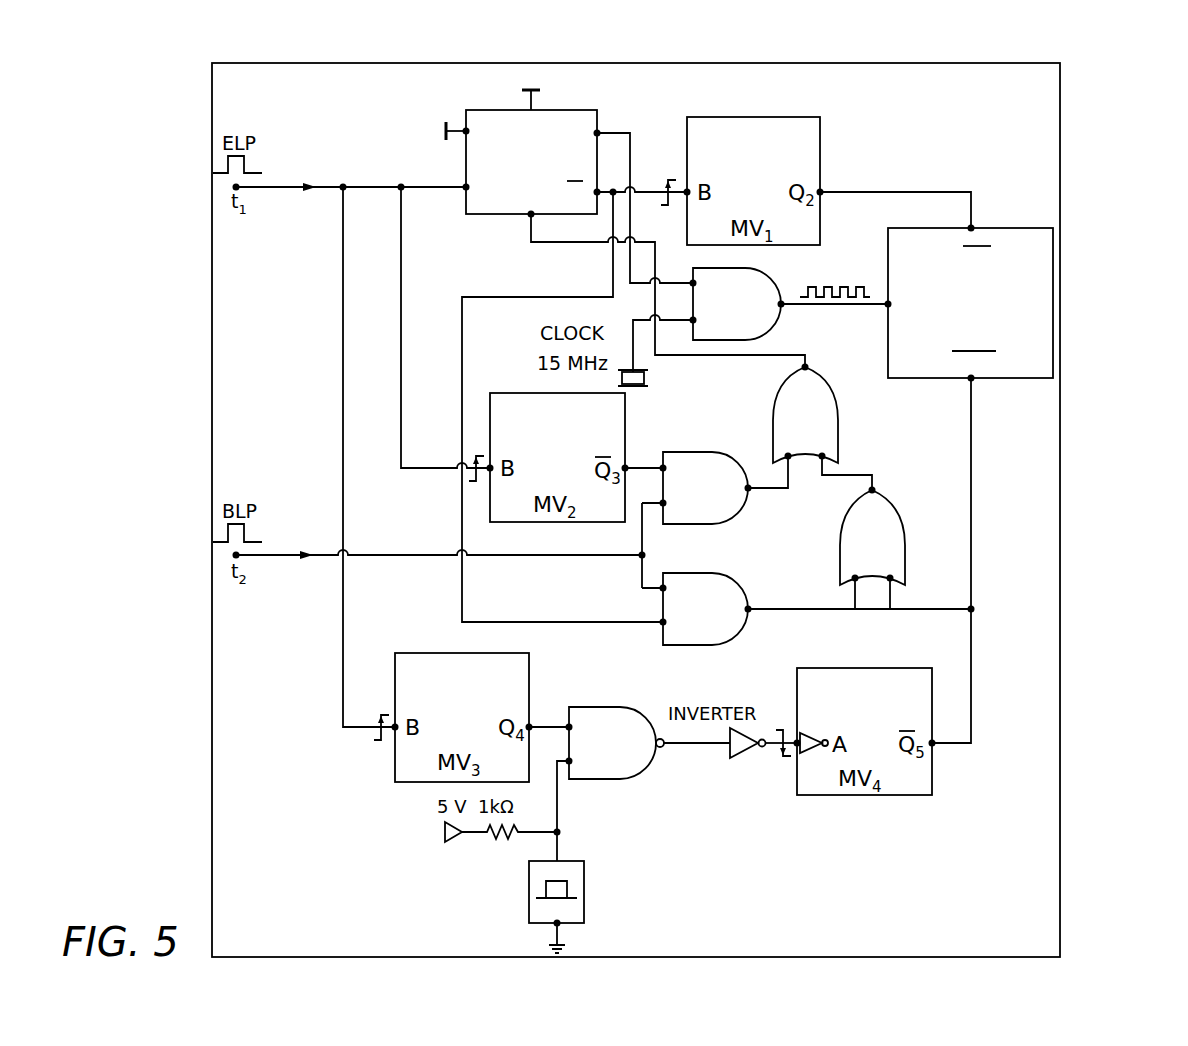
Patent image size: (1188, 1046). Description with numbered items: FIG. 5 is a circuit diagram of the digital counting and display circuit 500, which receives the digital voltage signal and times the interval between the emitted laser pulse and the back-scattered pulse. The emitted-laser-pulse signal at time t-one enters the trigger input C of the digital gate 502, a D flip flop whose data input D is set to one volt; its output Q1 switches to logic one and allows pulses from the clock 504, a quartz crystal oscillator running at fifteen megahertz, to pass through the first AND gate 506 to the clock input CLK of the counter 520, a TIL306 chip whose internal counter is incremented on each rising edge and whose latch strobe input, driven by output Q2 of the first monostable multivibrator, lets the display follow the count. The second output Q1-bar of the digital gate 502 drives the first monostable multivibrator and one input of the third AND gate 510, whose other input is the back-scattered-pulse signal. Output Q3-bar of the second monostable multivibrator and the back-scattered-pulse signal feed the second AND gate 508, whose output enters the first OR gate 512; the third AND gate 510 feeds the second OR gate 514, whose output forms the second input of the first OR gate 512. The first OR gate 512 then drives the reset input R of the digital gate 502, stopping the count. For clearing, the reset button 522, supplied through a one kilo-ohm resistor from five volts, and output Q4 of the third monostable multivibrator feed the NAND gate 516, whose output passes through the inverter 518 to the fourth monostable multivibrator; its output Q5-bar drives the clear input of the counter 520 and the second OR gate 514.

The digital counting and display circuit 500 is at (1079, 81).
The digital gate 502 is at (488, 216).
The clock 504 is at (648, 378).
The first AND gate 506 is at (737, 304).
The second AND gate 508 is at (705, 488).
The third AND gate 510 is at (705, 609).
The first OR gate 512 is at (805, 415).
The second OR gate 514 is at (872, 537).
The NAND gate 516 is at (616, 743).
The inverter 518 is at (747, 760).
The counter 520 is at (1025, 228).
The reset button 522 is at (584, 890).